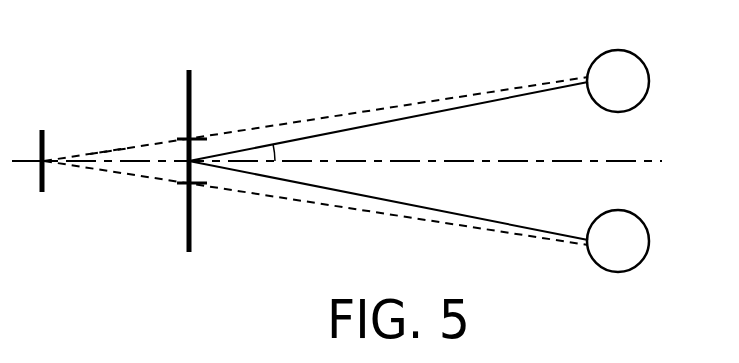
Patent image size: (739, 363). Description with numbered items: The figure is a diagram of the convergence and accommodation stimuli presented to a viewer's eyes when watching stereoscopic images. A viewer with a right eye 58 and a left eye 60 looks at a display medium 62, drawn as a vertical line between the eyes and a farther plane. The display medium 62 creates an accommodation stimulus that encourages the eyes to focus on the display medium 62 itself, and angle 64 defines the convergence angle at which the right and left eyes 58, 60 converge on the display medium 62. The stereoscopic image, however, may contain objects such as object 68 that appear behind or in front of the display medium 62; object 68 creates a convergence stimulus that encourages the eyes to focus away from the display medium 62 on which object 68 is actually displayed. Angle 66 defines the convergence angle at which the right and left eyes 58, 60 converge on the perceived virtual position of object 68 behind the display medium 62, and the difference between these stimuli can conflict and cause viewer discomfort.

The right eye 58 is at (626, 101).
The left eye 60 is at (627, 221).
The display medium 62 is at (194, 240).
The convergence angle 64 is at (277, 153).
The convergence angle 66 is at (144, 156).
The object 68 is at (46, 182).